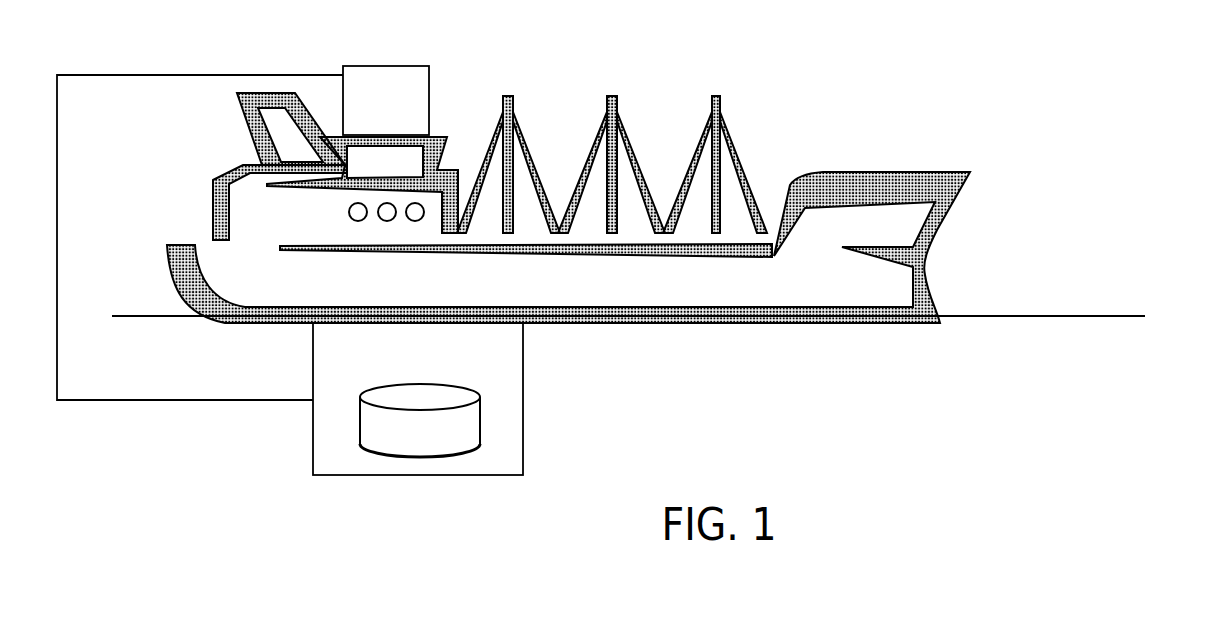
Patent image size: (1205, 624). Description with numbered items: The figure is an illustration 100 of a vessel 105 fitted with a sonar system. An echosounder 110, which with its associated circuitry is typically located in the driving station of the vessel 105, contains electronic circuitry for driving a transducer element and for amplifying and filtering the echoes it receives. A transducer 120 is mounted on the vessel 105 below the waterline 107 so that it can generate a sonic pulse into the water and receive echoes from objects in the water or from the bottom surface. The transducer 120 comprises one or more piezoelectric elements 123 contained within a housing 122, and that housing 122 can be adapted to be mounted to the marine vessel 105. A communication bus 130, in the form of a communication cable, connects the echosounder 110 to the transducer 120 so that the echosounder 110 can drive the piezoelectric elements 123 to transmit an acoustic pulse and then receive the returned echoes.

The illustration 100 is at (900, 75).
The vessel 105 is at (965, 172).
The waterline 107 is at (1008, 317).
The echosounder 110 is at (365, 117).
The transducer 120 is at (360, 371).
The housing 122 is at (523, 430).
The piezoelectric element 123 is at (400, 444).
The communication bus 130 is at (148, 403).